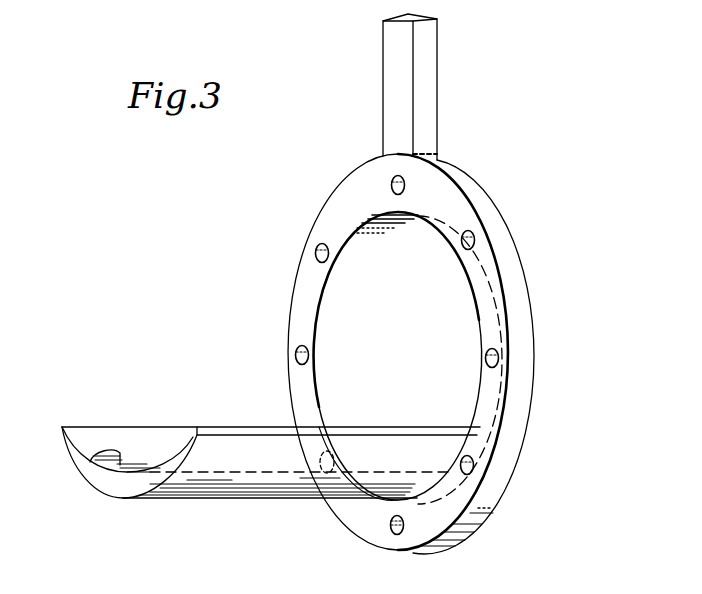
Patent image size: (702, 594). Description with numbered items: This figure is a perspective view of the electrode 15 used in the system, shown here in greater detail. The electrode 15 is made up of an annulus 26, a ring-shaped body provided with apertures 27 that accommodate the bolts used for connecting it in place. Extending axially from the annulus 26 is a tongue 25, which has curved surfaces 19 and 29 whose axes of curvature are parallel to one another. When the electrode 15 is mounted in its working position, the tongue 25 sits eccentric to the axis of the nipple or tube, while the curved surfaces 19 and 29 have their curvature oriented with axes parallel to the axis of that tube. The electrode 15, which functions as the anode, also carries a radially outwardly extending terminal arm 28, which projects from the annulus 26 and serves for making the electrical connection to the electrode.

The electrode 15 is at (545, 284).
The curved surface 19 is at (192, 480).
The tongue 25 is at (253, 483).
The annulus 26 is at (516, 420).
The apertures 27 is at (318, 259).
The terminal arm 28 is at (428, 82).
The curved surface 29 is at (92, 457).